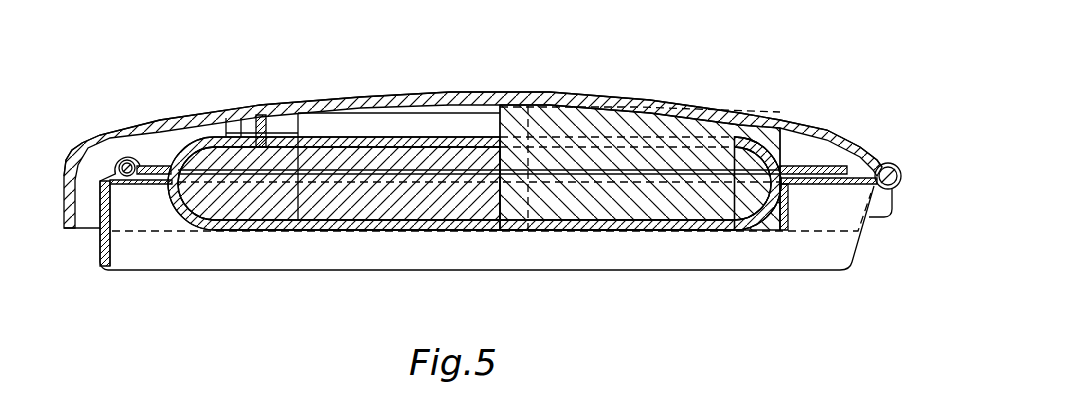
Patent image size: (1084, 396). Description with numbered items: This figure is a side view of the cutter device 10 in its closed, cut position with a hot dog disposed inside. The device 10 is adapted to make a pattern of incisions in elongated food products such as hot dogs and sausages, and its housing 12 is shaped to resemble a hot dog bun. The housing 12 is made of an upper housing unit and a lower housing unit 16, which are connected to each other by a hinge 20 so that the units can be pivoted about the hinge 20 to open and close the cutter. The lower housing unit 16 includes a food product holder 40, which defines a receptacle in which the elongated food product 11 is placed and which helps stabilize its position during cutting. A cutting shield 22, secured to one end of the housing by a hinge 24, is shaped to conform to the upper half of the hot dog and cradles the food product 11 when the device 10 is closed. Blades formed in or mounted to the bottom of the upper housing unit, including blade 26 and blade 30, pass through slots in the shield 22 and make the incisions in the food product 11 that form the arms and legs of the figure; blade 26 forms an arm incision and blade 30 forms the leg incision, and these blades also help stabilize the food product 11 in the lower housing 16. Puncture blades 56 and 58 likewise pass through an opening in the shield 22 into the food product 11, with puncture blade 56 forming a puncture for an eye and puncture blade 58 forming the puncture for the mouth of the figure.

The device 10 is at (728, 65).
The food product 11 is at (410, 157).
The housing 12 is at (600, 88).
The lower housing unit 16 is at (183, 253).
The hinge 20 is at (907, 167).
The cutting shield 22 is at (190, 145).
The hinge 24 is at (123, 160).
The blade 26 is at (465, 118).
The blade 30 is at (577, 207).
The food product holder 40 is at (327, 232).
The puncture blade 56 is at (240, 120).
The puncture blade 58 is at (273, 132).